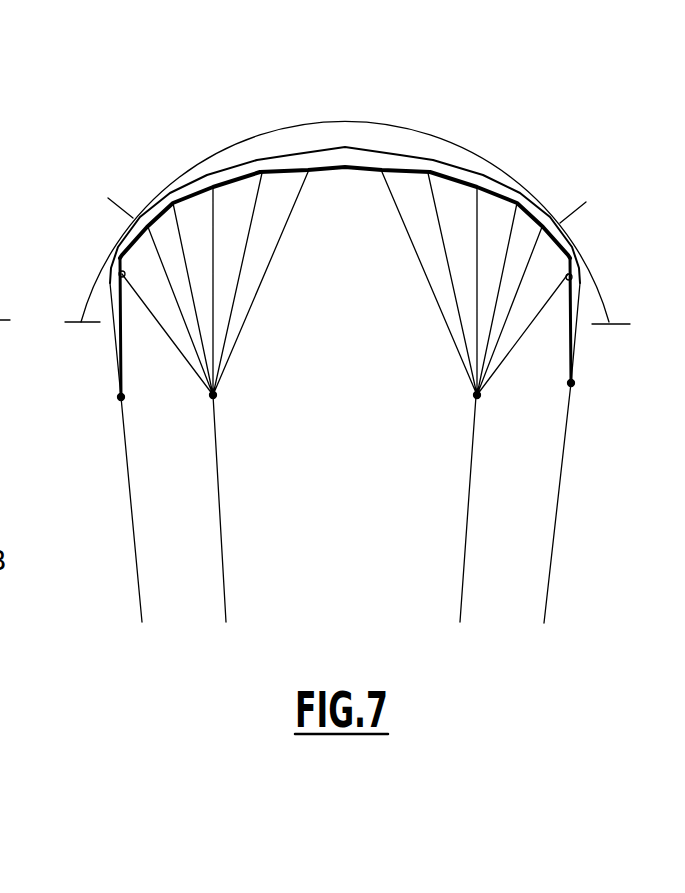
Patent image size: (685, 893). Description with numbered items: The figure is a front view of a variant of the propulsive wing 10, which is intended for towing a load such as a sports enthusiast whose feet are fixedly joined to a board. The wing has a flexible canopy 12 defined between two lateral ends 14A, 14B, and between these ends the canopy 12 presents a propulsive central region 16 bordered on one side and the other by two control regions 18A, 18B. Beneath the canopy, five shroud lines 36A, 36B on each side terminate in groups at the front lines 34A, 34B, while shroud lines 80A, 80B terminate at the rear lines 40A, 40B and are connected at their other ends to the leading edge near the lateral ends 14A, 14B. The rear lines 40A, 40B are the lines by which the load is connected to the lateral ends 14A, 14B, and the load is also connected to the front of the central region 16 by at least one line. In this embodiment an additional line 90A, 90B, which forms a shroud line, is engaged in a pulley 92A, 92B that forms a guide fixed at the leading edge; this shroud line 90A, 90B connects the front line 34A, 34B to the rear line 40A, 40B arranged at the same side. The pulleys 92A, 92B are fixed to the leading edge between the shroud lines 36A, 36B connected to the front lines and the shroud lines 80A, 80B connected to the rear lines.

The propulsive wing 10 is at (171, 137).
The flexible canopy 12 is at (386, 158).
The propulsive central region 16 is at (345, 122).
The control region 18A is at (108, 228).
The control region 18B is at (293, 221).
The pulley 92A is at (119, 274).
The pulley 92B is at (574, 277).
The shroud line 80A is at (135, 362).
The shroud line 80B is at (550, 362).
The lateral end 14A is at (100, 336).
The lateral end 14B is at (592, 342).
The shroud lines 36A is at (247, 323).
The shroud lines 36B is at (445, 330).
The additional line 90A is at (187, 358).
The additional line 90B is at (503, 362).
The rear line 40A is at (129, 490).
The rear line 40B is at (556, 550).
The front line 34A is at (222, 550).
The front line 34B is at (461, 578).